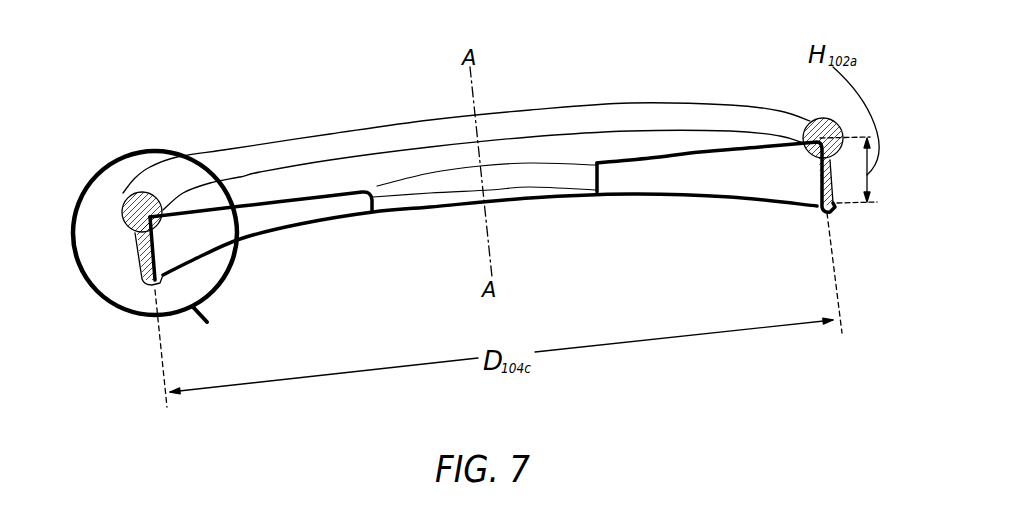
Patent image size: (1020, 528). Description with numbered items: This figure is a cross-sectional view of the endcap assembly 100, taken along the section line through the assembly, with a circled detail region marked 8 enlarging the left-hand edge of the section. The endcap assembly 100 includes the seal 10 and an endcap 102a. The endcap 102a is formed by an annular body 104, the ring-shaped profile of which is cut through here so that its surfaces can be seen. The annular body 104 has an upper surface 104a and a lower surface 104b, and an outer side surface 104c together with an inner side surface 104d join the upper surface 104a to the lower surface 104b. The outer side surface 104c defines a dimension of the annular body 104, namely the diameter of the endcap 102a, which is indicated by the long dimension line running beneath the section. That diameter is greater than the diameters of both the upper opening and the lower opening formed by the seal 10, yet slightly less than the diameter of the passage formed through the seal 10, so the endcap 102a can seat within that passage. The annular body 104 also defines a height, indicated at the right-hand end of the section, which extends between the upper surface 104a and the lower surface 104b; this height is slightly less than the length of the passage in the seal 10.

The endcap assembly 100 is at (383, 57).
The seal 10 is at (403, 107).
The endcap 102a is at (377, 163).
The annular body 104 is at (458, 215).
The upper surface 104a is at (617, 142).
The lower surface 104b is at (330, 197).
The outer side surface 104c is at (150, 250).
The inner side surface 104d is at (157, 247).
The detail view FIG. 8 callout 8 is at (155, 259).